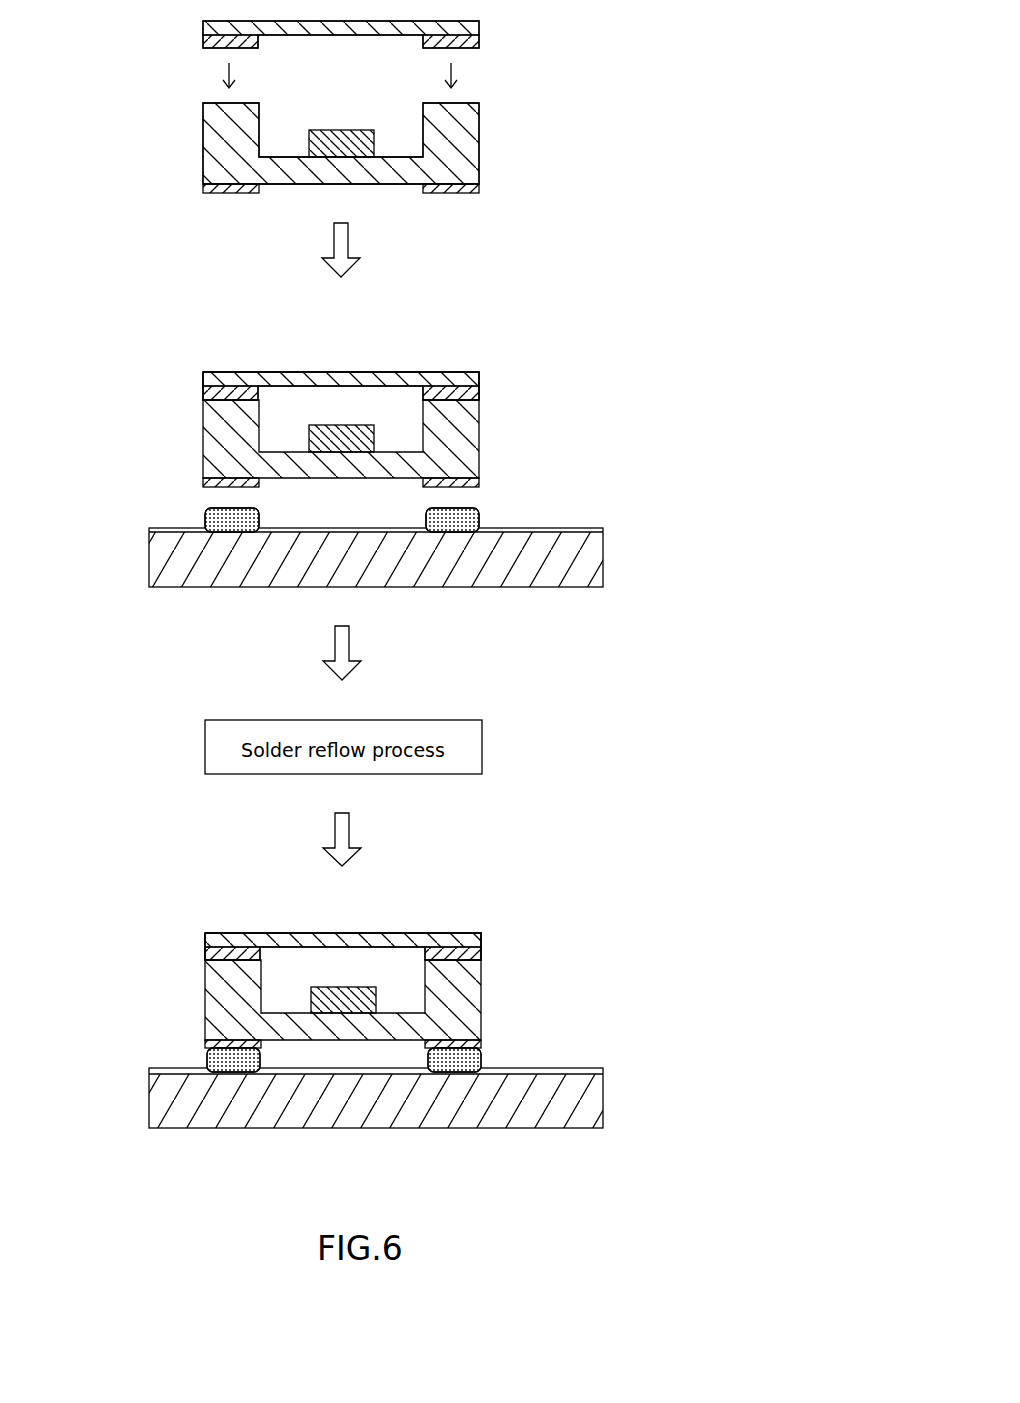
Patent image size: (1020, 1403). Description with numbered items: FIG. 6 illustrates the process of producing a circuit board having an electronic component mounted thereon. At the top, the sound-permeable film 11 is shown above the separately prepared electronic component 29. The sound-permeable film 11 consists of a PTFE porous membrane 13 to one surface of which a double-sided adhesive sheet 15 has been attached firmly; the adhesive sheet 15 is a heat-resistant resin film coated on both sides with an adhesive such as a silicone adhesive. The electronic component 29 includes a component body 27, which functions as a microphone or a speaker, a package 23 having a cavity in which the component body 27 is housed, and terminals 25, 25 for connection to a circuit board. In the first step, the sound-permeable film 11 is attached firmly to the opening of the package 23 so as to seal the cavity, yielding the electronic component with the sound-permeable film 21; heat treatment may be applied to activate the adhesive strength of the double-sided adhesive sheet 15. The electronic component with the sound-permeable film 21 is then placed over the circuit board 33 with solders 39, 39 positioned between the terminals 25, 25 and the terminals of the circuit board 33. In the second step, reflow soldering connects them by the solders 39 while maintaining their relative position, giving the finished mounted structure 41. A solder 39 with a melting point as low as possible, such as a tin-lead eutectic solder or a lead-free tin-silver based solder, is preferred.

The sound-permeable film 11 is at (547, 0).
The PTFE porous membrane 13 is at (470, 30).
The double-sided adhesive sheet 15 is at (470, 41).
The electronic component with the sound-permeable film 21 is at (473, 356).
The package 23 is at (470, 163).
The terminals 25 is at (204, 189).
The component body 27 is at (355, 137).
The electronic component 29 is at (200, 140).
The circuit board 33 is at (356, 570).
The solder 39 is at (210, 517).
The mounted structure 41 is at (189, 927).